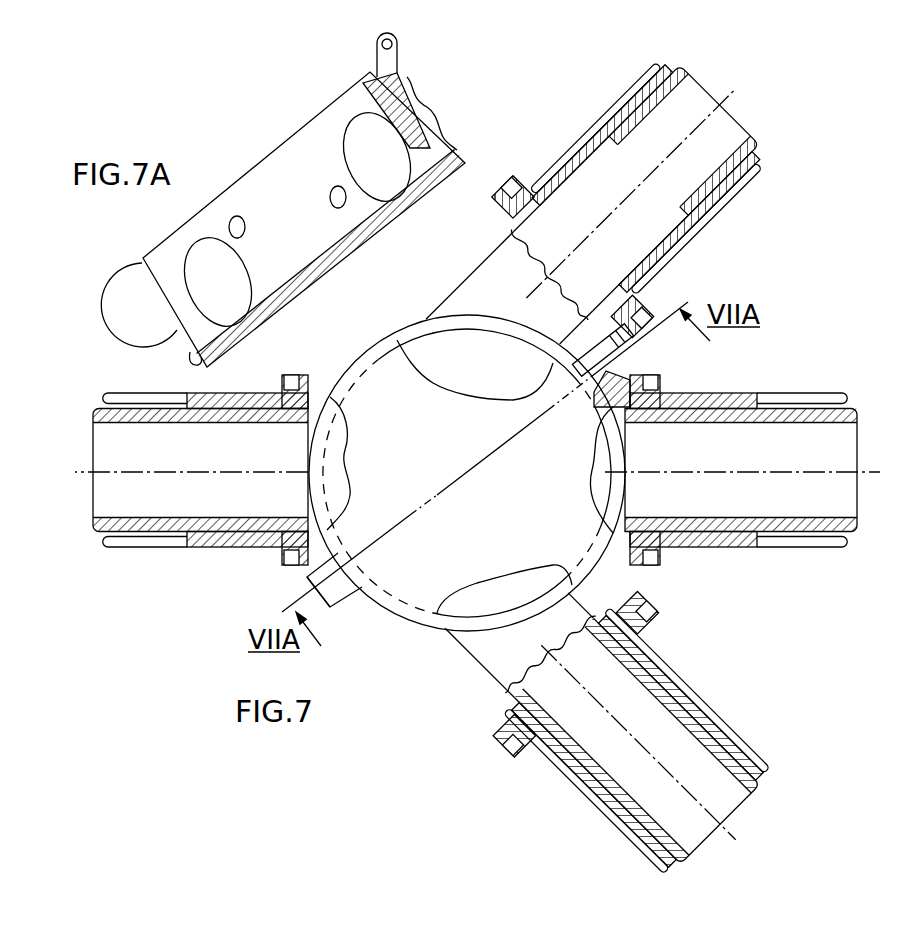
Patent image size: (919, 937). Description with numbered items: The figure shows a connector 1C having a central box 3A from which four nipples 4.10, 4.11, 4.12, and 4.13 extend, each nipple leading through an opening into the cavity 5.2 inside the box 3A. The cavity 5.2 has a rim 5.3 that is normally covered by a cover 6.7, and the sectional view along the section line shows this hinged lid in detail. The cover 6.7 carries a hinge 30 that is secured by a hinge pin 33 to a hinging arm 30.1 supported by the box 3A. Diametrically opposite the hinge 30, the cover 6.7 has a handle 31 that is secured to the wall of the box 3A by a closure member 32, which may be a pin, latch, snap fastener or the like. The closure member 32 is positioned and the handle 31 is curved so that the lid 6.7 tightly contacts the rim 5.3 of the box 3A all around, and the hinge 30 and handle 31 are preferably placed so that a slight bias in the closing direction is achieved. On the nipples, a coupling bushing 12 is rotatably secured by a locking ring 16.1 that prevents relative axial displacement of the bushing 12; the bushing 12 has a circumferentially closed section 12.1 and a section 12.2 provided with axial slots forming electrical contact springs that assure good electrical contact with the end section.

In FIG. 7, the coupling bushing 12 is at (200, 559).
In FIG. 7, the circumferentially closed section 12.1 is at (673, 667).
In FIG. 7, the slotted section 12.2 is at (742, 743).
In FIG. 7, the nipple 4.10 is at (820, 513).
In FIG. 7, the nipple 4.11 is at (700, 198).
In FIG. 7A, the nipple 4.11 is at (445, 137).
In FIG. 7, the nipple 4.12 is at (197, 515).
In FIG. 7, the nipple 4.13 is at (678, 803).
In FIG. 7, the cavity 5.2 is at (494, 386).
In FIG. 7A, the cavity 5.2 is at (305, 147).
In FIG. 7, the rim 5.3 is at (407, 333).
In FIG. 7, the cover 6.7 is at (467, 473).
In FIG. 7A, the cover 6.7 is at (260, 163).
In FIG. 7, the locking ring 16.1 is at (626, 660).
In FIG. 7, the hinge 30 is at (648, 356).
In FIG. 7A, the hinge 30 is at (419, 25).
In FIG. 7A, the hinging arm 30.1 is at (395, 70).
In FIG. 7, the handle 31 is at (316, 580).
In FIG. 7A, the handle 31 is at (128, 316).
In FIG. 7A, the closure member 32 is at (182, 342).
In FIG. 7A, the hinge pin 33 is at (382, 44).
In FIG. 7, the central box 3A is at (391, 606).
In FIG. 7A, the central box 3A is at (315, 243).
In FIG. 7, the connector 1C is at (361, 712).